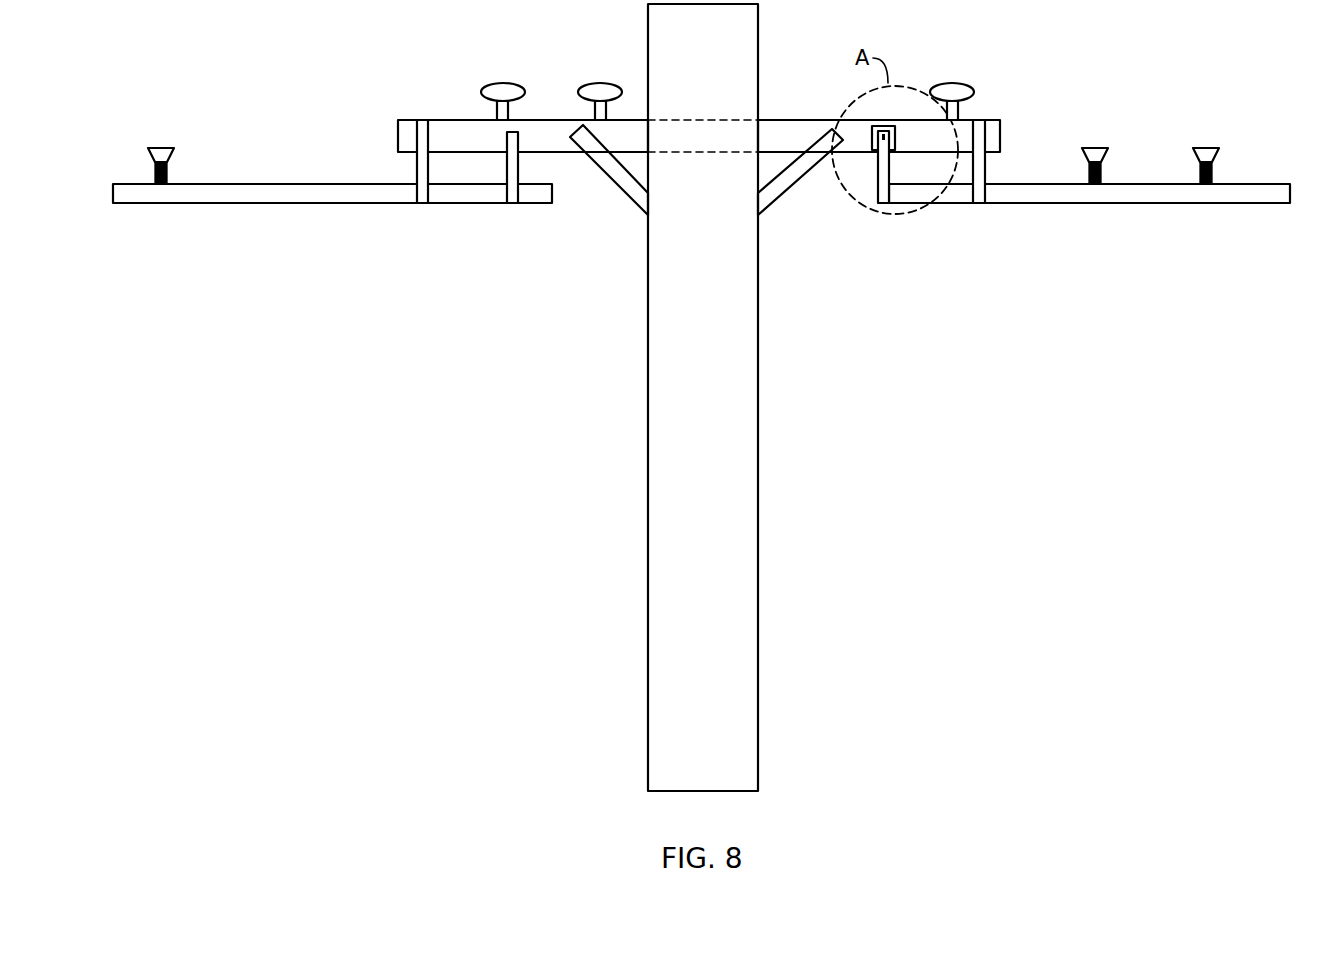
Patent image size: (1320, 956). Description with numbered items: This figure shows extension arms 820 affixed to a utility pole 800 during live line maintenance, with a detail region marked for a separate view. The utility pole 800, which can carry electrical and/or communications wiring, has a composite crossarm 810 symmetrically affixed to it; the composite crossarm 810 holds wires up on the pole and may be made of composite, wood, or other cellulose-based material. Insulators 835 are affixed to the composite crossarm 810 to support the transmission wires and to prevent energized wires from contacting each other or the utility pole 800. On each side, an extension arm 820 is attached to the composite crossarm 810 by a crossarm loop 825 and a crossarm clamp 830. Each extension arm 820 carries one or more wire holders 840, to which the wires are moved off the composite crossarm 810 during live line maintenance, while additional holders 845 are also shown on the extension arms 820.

The utility pole 800 is at (727, 375).
The composite crossarm 810 is at (430, 120).
The extension arm 820 is at (246, 183).
The crossarm loop 825 is at (417, 170).
The crossarm clamp 830 is at (513, 203).
The insulator 835 is at (960, 82).
The wire holder 840 is at (1098, 147).
The light 845 is at (163, 147).